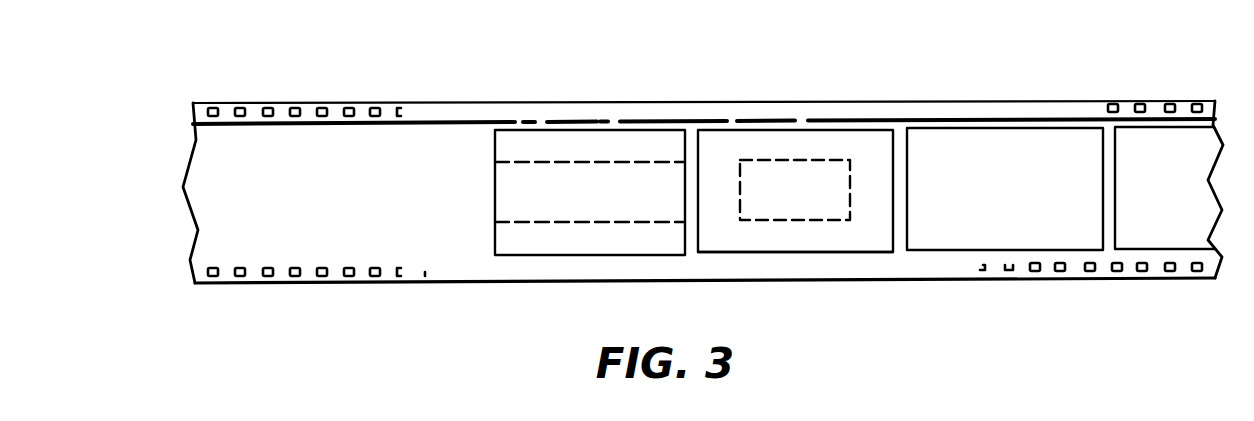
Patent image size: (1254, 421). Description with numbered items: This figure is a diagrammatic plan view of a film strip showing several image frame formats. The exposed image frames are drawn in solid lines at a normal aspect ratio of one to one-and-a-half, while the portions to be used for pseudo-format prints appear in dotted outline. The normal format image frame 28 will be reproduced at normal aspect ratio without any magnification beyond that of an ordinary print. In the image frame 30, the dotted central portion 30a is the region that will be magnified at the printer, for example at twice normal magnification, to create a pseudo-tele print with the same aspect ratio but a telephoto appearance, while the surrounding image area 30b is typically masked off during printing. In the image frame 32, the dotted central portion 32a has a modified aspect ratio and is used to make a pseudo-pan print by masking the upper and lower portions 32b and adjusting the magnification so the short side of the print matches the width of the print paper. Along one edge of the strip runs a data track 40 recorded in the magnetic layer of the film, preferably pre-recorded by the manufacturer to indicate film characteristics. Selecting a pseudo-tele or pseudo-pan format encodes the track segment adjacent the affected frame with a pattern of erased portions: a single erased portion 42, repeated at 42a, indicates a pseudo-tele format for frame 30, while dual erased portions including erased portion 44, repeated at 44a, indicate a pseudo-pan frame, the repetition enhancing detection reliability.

The normal format image frame 28 is at (943, 253).
The image frame 30 is at (737, 253).
The central portion 30a is at (840, 203).
The surrounding image area 30b is at (803, 233).
The image frame 32 is at (493, 228).
The central portion 32a is at (537, 187).
The upper and lower portions 32b is at (507, 144).
The data track 40 is at (196, 104).
The erased portion 42 is at (517, 120).
The repeated erased portion 42a is at (590, 120).
The erased portion 44 is at (541, 120).
The repeated erased portion 44a is at (613, 120).